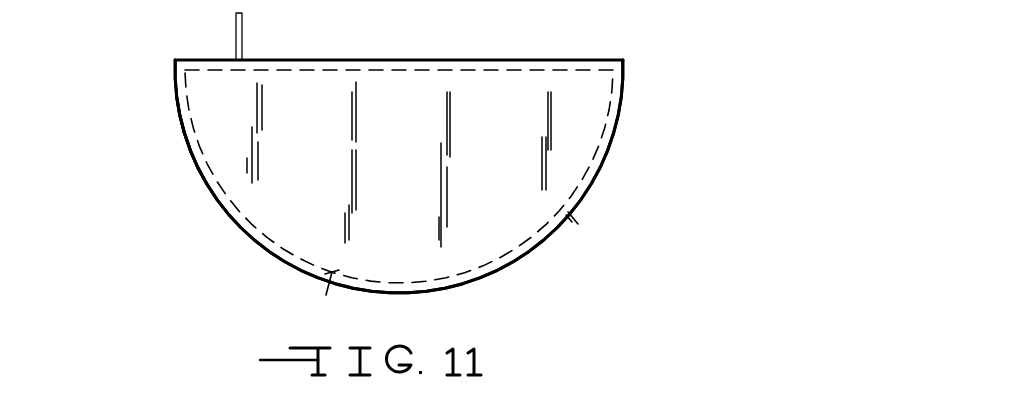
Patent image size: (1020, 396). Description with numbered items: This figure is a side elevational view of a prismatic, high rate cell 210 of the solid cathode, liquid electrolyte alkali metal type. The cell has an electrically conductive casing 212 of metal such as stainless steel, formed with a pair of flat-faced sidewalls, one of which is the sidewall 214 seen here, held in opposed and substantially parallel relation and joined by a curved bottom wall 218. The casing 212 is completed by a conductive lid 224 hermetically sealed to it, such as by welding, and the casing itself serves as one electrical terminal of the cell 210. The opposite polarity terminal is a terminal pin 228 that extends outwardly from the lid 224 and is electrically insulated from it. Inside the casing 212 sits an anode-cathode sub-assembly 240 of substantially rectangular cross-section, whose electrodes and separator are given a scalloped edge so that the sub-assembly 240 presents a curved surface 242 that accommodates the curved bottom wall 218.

The high rate cell 210 is at (145, 152).
The electrically conductive casing 212 is at (630, 123).
The flat-faced sidewall 214 is at (203, 182).
The curved bottom wall 218 is at (282, 262).
The conductive lid 224 is at (296, 61).
The terminal pin 228 is at (235, 24).
The anode-cathode sub-assembly 240 is at (434, 64).
The curved surface 242 is at (603, 245).